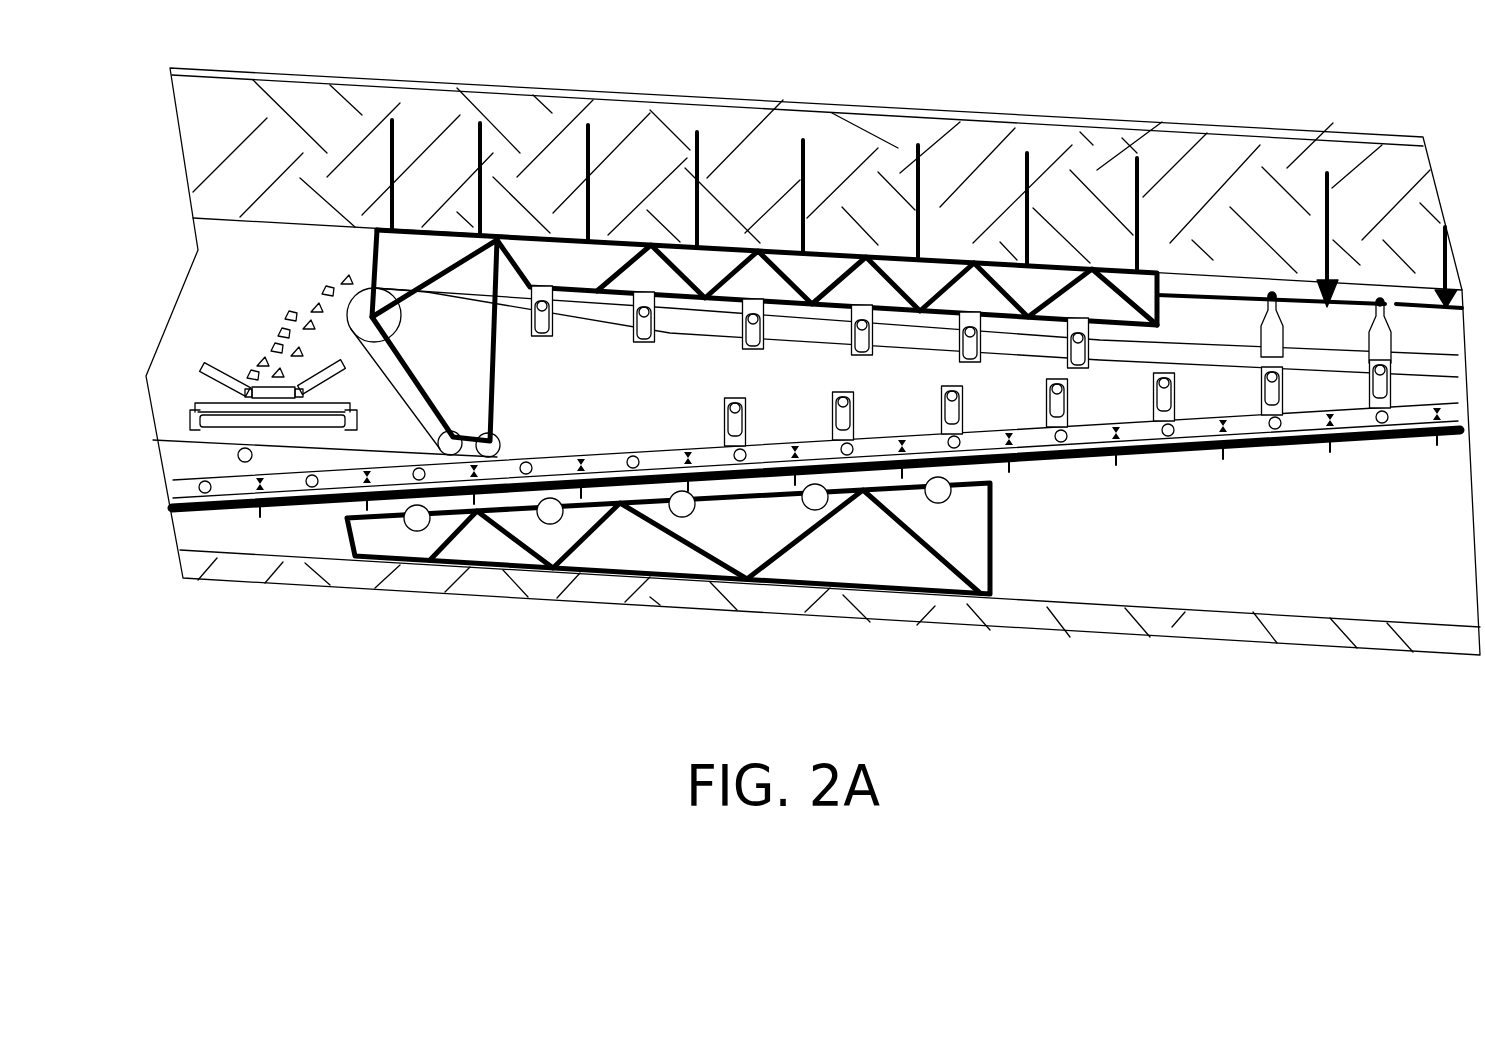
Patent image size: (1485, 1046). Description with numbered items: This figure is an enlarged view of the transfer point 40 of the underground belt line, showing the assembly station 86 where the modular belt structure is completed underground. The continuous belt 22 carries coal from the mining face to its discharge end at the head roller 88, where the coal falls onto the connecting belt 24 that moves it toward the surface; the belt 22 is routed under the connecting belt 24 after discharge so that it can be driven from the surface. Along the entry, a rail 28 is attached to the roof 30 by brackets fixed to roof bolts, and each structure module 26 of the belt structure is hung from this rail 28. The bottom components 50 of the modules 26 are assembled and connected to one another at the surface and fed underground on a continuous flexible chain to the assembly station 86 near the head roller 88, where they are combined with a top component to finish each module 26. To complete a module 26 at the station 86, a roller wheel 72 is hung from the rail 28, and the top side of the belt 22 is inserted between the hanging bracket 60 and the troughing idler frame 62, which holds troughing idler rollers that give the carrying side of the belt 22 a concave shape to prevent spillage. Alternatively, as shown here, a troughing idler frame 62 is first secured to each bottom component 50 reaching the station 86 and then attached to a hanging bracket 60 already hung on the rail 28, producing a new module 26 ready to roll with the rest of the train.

The continuous belt 22 is at (913, 333).
The connecting belt 24 is at (217, 363).
The structure module 26 is at (1401, 346).
The rail 28 is at (1218, 293).
The roof 30 is at (288, 264).
The transfer point 40 is at (363, 264).
The bottom component 50 is at (1353, 418).
The hanging bracket 60 is at (1260, 335).
The troughing idler frame 62 is at (1378, 385).
The roller wheel 72 is at (1280, 303).
The underground assembly station 86 is at (858, 377).
The head roller 88 is at (390, 318).